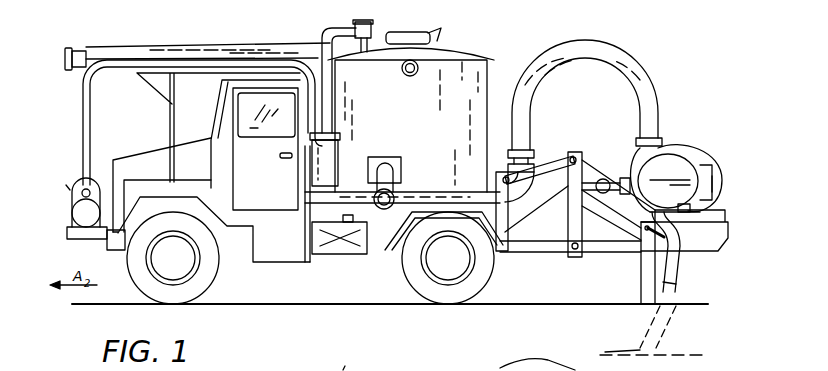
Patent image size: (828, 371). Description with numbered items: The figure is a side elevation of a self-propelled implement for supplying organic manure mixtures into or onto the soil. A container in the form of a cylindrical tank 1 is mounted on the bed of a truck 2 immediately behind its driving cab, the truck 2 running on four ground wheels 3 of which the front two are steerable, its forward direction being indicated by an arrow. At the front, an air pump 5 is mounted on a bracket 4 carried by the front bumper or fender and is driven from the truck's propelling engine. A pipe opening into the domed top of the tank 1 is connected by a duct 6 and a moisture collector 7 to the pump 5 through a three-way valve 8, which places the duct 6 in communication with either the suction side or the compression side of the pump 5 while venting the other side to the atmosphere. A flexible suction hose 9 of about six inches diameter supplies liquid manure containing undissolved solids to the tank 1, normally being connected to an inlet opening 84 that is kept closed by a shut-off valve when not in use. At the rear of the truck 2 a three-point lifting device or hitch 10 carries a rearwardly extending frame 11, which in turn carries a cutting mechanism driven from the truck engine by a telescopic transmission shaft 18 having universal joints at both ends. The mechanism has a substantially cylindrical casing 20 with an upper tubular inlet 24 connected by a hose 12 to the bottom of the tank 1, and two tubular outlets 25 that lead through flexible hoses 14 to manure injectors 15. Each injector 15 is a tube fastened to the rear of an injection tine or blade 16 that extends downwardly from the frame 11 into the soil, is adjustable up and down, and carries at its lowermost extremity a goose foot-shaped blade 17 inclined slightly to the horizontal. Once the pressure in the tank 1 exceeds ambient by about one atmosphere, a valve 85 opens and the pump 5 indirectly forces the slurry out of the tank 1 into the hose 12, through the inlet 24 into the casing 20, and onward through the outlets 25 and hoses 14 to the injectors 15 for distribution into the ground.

The cylindrical tank 1 is at (486, 59).
The truck 2 is at (277, 270).
The ground wheels 3 is at (205, 279).
The bracket 4 is at (92, 248).
The air pump 5 is at (80, 211).
The duct 6 is at (89, 115).
The moisture collector 7 is at (336, 149).
The three-way valve 8 is at (66, 185).
The flexible suction hose 9 is at (148, 44).
The three-point lifting device or hitch 10 is at (540, 251).
The frame 11 is at (602, 250).
The hose 12 is at (632, 70).
The flexible hoses 14 is at (667, 152).
The manure injectors 15 is at (671, 293).
The injection tines or blades 16 is at (641, 278).
The goose foot-shaped blade 17 is at (613, 352).
The telescopic transmission shaft 18 is at (600, 190).
The casing 20 is at (689, 176).
The upper tubular inlet 24 is at (338, 359).
The tubular outlets 25 is at (718, 183).
The inlet opening 84 is at (385, 166).
The valve 85 is at (536, 181).